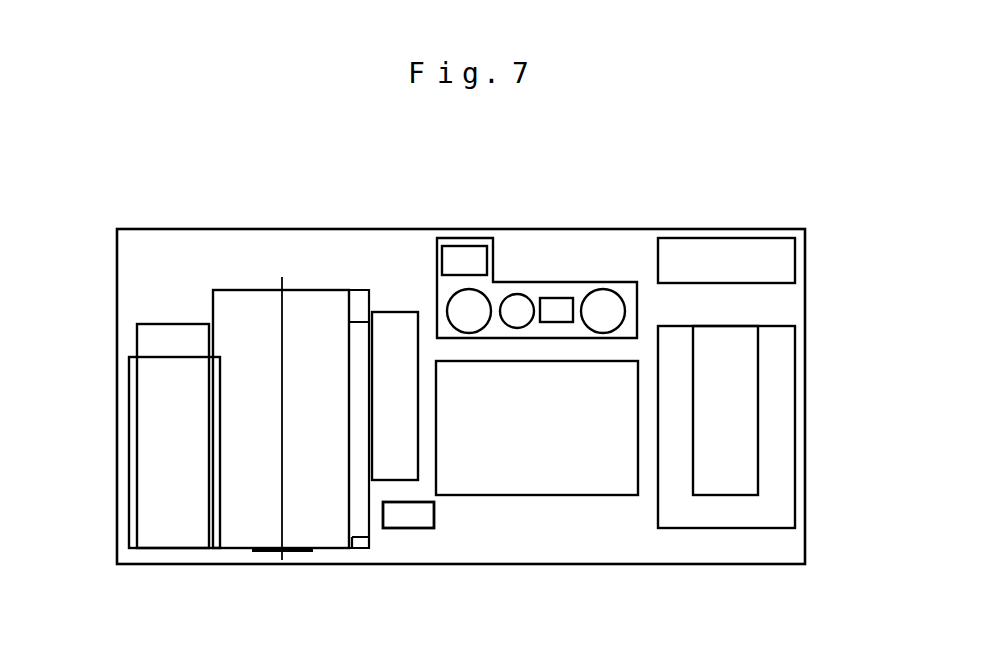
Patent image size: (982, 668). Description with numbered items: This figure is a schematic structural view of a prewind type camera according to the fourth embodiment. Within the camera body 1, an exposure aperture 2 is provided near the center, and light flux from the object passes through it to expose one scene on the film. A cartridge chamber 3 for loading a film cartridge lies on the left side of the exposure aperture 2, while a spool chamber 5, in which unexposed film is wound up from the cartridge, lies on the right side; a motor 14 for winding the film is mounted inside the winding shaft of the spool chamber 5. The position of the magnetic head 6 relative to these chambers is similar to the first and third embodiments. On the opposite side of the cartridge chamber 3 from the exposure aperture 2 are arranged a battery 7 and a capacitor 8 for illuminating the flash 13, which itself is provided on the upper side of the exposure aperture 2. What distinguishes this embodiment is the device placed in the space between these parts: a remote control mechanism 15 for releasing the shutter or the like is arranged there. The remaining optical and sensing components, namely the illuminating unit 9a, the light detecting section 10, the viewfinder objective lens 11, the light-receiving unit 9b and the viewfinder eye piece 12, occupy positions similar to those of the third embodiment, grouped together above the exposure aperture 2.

The camera body 1 is at (780, 227).
The exposure aperture 2 is at (567, 490).
The cartridge chamber 3 is at (257, 297).
The spool chamber 5 is at (788, 357).
The magnetic head 6 is at (413, 522).
The battery 7 is at (130, 422).
The capacitor 8 is at (145, 339).
The illuminating unit 9a is at (455, 310).
The light-receiving unit 9b is at (613, 300).
The light detecting section 10 is at (517, 300).
The viewfinder objective lens 11 is at (560, 307).
The viewfinder eye piece 12 is at (467, 252).
The flash 13 is at (785, 256).
The motor 14 is at (755, 412).
The remote control mechanism 15 is at (390, 318).